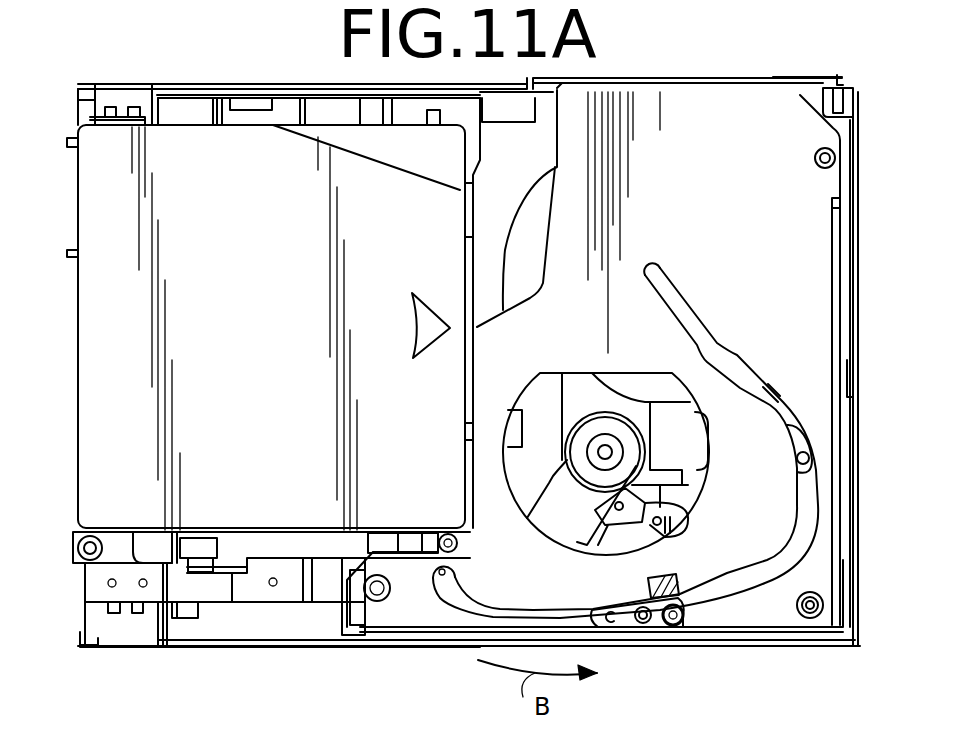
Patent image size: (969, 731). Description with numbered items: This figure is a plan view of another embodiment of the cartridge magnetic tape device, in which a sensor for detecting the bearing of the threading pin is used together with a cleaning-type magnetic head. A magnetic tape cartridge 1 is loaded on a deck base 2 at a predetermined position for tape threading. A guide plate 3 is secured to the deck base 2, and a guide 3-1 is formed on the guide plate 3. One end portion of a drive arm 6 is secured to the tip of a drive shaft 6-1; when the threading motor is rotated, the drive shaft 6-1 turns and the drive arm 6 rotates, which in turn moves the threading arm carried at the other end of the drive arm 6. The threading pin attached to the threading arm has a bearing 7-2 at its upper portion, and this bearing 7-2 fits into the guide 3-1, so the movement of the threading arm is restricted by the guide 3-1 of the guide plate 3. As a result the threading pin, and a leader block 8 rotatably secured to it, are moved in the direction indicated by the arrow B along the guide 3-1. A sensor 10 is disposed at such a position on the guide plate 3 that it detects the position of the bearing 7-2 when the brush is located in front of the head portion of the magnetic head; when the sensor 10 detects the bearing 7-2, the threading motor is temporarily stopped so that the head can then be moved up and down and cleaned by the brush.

The magnetic tape cartridge 1 is at (105, 339).
The deck base 2 is at (182, 585).
The guide plate 3 is at (796, 297).
The guide 3-1 is at (815, 467).
The drive arm 6 is at (565, 511).
The drive shaft 6-1 is at (605, 450).
The bearing 7-2 is at (672, 627).
The leader block 8 is at (612, 627).
The sensor 10 is at (682, 587).